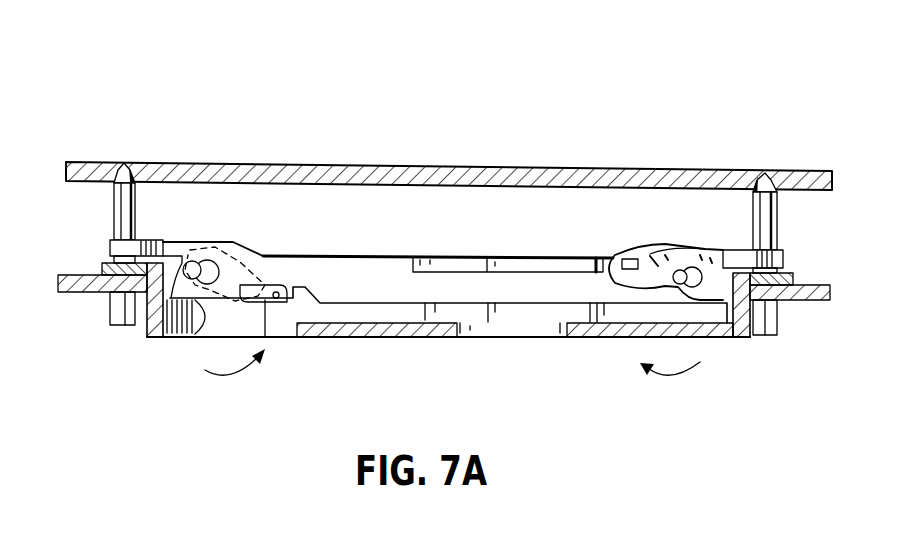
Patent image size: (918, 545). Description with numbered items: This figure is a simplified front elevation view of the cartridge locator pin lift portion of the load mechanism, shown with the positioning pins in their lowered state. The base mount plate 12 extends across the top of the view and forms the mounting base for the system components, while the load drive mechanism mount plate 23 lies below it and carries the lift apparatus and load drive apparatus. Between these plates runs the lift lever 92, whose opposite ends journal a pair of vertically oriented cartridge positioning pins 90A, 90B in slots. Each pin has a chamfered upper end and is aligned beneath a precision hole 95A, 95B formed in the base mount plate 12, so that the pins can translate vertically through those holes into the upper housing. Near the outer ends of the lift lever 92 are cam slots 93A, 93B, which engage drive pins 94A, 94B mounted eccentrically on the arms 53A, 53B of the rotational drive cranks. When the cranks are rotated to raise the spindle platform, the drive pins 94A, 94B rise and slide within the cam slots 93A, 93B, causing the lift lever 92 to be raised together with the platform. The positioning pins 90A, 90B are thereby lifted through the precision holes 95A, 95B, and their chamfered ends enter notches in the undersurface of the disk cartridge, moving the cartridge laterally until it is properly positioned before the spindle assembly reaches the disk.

The base mount plate 12 is at (290, 163).
The load drive mechanism mount plate 23 is at (430, 338).
The lift lever 92 is at (340, 256).
The cam slot 93A is at (208, 245).
The cam slot 93B is at (612, 262).
The arm of rotational drive crank 53A is at (270, 337).
The arm of rotational drive crank 53B is at (705, 248).
The drive pin 94A is at (205, 336).
The drive pin 94B is at (722, 338).
The precision hole 95A is at (128, 162).
The precision hole 95B is at (765, 172).
The cartridge positioning pin 90A is at (113, 208).
The cartridge positioning pin 90B is at (782, 220).